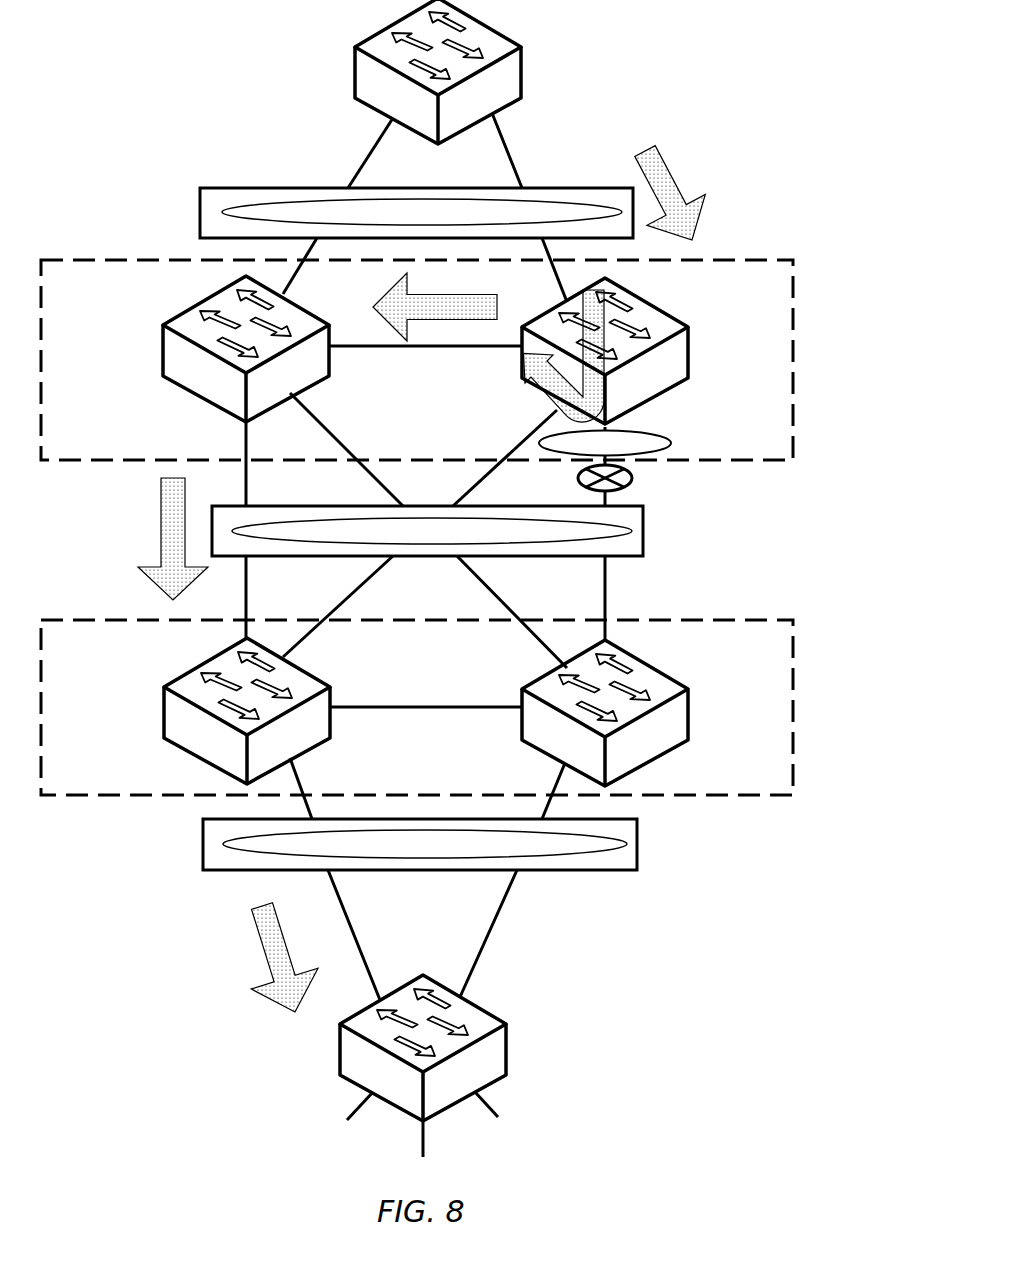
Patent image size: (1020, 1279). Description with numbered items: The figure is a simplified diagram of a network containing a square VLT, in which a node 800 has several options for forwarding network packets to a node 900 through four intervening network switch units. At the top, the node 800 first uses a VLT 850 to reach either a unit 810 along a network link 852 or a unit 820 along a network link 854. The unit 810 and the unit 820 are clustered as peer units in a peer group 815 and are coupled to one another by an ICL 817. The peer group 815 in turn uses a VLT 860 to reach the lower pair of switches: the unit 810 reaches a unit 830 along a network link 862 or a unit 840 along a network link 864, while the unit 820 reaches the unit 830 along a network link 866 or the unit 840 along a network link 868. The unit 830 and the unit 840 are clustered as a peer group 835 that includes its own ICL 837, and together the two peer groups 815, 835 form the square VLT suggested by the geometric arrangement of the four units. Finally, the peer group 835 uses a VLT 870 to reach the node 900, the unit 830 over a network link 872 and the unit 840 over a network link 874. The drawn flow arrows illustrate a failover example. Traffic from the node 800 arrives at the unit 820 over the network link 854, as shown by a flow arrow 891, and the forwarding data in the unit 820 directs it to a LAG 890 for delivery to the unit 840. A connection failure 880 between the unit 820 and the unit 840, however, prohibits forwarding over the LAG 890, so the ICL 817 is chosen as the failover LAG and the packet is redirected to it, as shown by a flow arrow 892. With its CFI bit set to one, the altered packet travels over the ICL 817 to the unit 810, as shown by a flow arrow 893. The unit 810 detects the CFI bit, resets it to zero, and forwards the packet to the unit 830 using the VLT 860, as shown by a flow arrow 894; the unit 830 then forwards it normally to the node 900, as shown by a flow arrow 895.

The node 800 is at (487, 72).
The VLT 850 is at (416, 213).
The network link 852 is at (378, 137).
The network link 854 is at (508, 142).
The flow arrow 891 is at (668, 170).
The flow arrow 893 is at (433, 293).
The peer group 815 is at (795, 378).
The network switch unit 810 is at (199, 349).
The network switch unit 820 is at (648, 351).
The ICL 817 is at (387, 348).
The flow arrow 892 is at (537, 391).
The network link 864 is at (328, 425).
The network link 862 is at (248, 468).
The LAG 890 is at (605, 441).
The connection failure 880 is at (633, 473).
The VLT 860 is at (427, 531).
The flow arrow 894 is at (162, 520).
The network link 868 is at (607, 580).
The network link 866 is at (315, 635).
The peer group 835 is at (795, 635).
The network switch unit 830 is at (201, 711).
The network switch unit 840 is at (649, 713).
The ICL 837 is at (412, 707).
The VLT 870 is at (420, 844).
The network link 872 is at (327, 878).
The network link 874 is at (492, 933).
The flow arrow 895 is at (260, 947).
The node 900 is at (480, 1066).